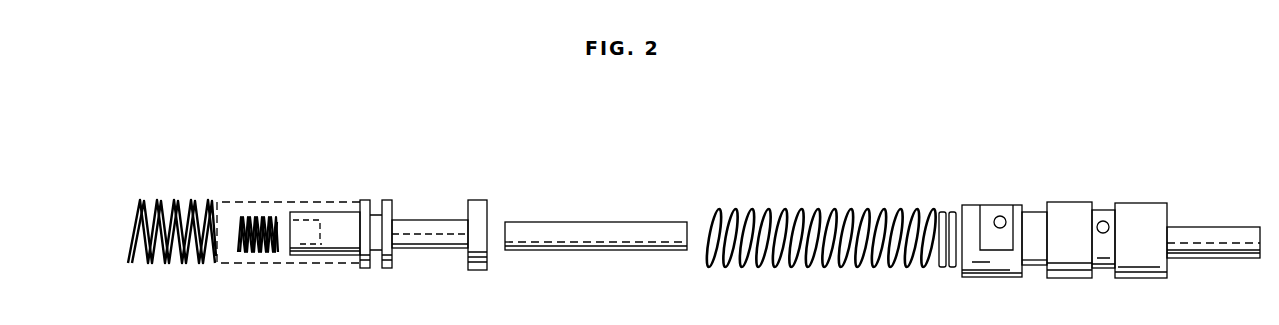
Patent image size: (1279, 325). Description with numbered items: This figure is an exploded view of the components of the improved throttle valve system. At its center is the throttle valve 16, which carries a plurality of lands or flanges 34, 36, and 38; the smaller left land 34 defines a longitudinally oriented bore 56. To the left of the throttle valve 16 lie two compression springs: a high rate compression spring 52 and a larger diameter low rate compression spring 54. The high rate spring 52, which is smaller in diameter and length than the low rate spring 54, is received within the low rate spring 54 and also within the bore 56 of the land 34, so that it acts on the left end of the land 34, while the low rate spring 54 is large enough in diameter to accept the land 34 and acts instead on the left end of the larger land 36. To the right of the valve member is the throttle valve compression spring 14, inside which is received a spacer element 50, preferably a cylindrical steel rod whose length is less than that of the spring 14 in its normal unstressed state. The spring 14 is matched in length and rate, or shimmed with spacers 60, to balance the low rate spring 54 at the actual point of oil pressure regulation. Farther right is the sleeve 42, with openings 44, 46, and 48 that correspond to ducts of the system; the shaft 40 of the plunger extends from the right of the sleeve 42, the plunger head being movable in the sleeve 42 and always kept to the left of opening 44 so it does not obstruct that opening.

The throttle valve compression spring 14 is at (840, 210).
The throttle valve 16 is at (441, 194).
The land 34 is at (323, 212).
The land 36 is at (368, 200).
The land 38 is at (484, 200).
The shaft 40 is at (1225, 227).
The sleeve 42 is at (1036, 211).
The opening 44 is at (1104, 221).
The opening 46 is at (1015, 272).
The opening 48 is at (1000, 216).
The spacer element 50 is at (558, 252).
The high rate compression spring 52 is at (250, 253).
The low rate compression spring 54 is at (153, 263).
The bore 56 is at (323, 244).
The spacers 60 is at (951, 212).